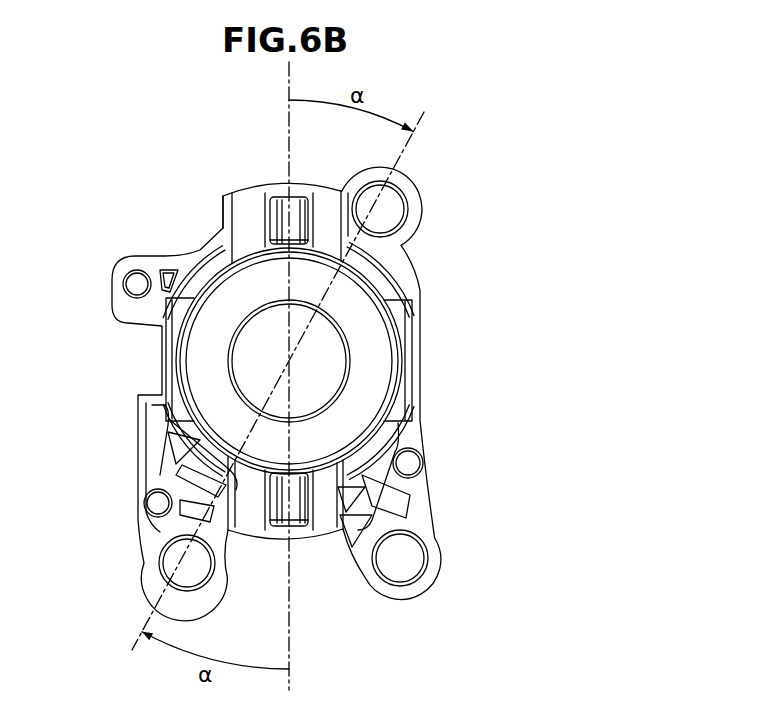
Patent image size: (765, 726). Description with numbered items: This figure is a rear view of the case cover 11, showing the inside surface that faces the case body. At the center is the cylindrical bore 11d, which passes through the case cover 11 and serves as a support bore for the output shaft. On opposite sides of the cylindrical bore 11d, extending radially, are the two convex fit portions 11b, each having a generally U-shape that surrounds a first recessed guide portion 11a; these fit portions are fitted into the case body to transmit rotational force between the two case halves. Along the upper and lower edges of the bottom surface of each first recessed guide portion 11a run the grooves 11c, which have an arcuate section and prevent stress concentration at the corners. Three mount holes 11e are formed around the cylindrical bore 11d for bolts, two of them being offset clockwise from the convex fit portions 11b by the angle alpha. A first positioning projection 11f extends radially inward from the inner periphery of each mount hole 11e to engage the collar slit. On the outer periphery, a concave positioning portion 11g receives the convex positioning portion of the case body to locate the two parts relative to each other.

The case cover 11 is at (440, 353).
The first recessed guide portion 11a is at (285, 203).
The convex fit portion 11b is at (250, 203).
The groove 11c is at (273, 517).
The cylindrical bore 11d is at (247, 368).
The mount hole 11e is at (402, 194).
The first positioning projection 11f is at (398, 228).
The concave positioning portion 11g is at (150, 338).